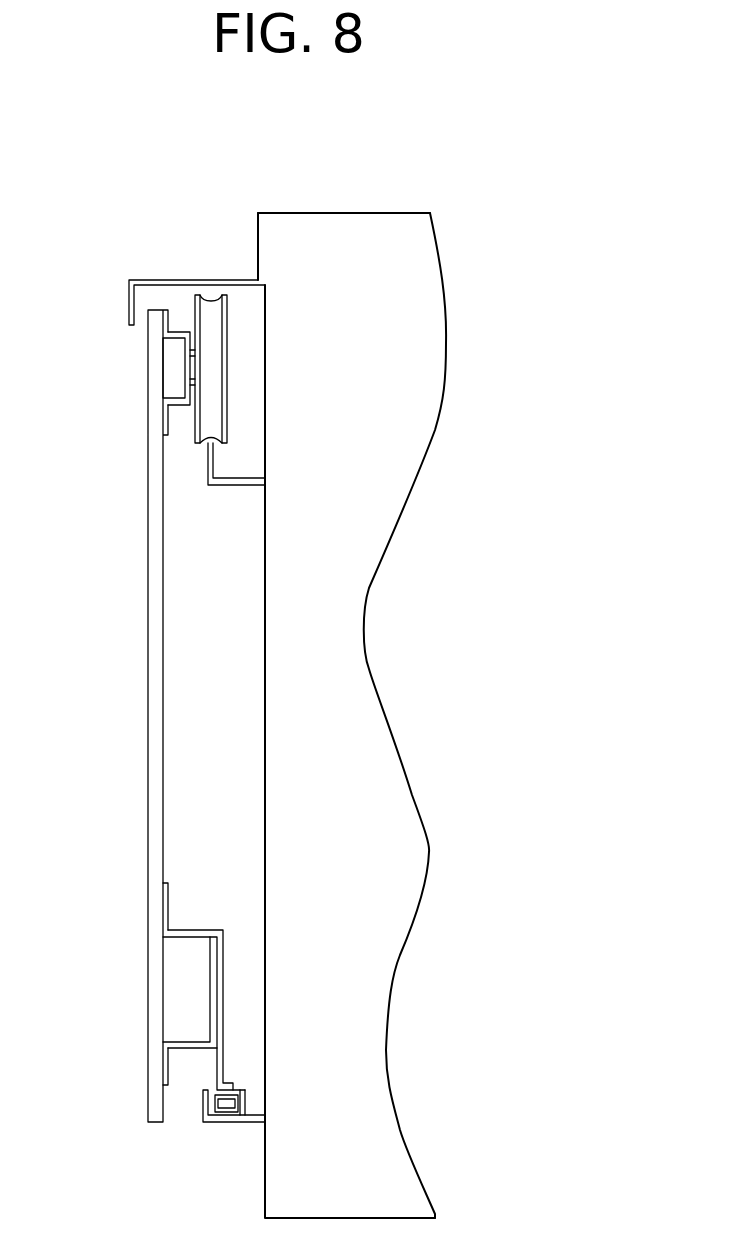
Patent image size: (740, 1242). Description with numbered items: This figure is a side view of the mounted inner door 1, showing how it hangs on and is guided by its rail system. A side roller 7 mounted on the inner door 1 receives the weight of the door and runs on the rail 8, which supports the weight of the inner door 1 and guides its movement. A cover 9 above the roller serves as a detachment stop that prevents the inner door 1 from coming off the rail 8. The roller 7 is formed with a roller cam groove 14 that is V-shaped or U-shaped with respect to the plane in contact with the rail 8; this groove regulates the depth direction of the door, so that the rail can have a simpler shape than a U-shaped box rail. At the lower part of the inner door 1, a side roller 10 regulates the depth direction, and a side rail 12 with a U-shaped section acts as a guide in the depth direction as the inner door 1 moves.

The inner door 1 is at (148, 593).
The side roller 7 is at (226, 335).
The rail 8 is at (240, 490).
The cover 9 is at (147, 280).
The side roller 10 is at (207, 1107).
The side rail 12 is at (247, 1122).
The roller cam groove 14 is at (208, 300).